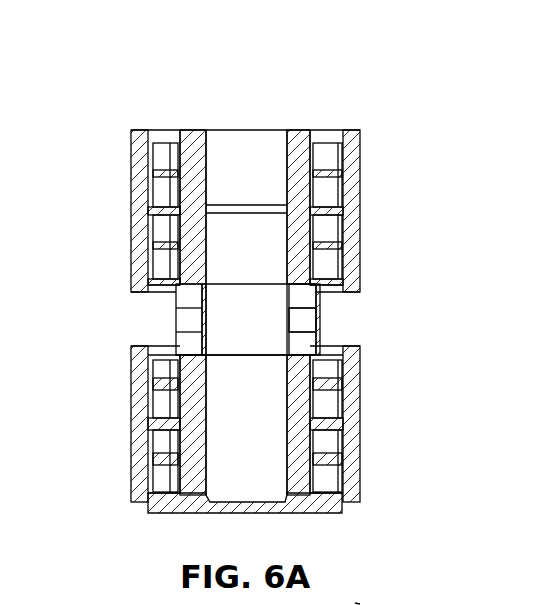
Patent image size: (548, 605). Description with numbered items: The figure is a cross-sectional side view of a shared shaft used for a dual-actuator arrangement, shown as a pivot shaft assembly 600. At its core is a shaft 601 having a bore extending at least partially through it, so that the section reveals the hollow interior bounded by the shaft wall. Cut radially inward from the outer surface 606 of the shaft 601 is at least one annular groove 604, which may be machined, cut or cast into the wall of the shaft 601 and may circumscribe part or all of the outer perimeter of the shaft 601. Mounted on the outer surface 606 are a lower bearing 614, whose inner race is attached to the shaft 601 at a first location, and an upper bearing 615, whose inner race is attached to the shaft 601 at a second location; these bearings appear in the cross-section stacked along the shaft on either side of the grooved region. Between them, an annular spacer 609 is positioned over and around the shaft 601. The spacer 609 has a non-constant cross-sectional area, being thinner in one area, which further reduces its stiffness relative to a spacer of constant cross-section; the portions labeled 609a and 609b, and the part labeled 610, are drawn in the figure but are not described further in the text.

The pivot shaft assembly 600 is at (170, 101).
The shaft 601 is at (190, 133).
The upper bearing 615 is at (330, 182).
The outer surface 606 is at (160, 232).
The annular groove 604 is at (176, 297).
The annular spacer 609 is at (176, 345).
The outer conductive ring 609a is at (320, 300).
The inner conductive ring 609b is at (320, 322).
The lower bearing 614 is at (300, 468).
The coupling member 610 is at (360, 604).